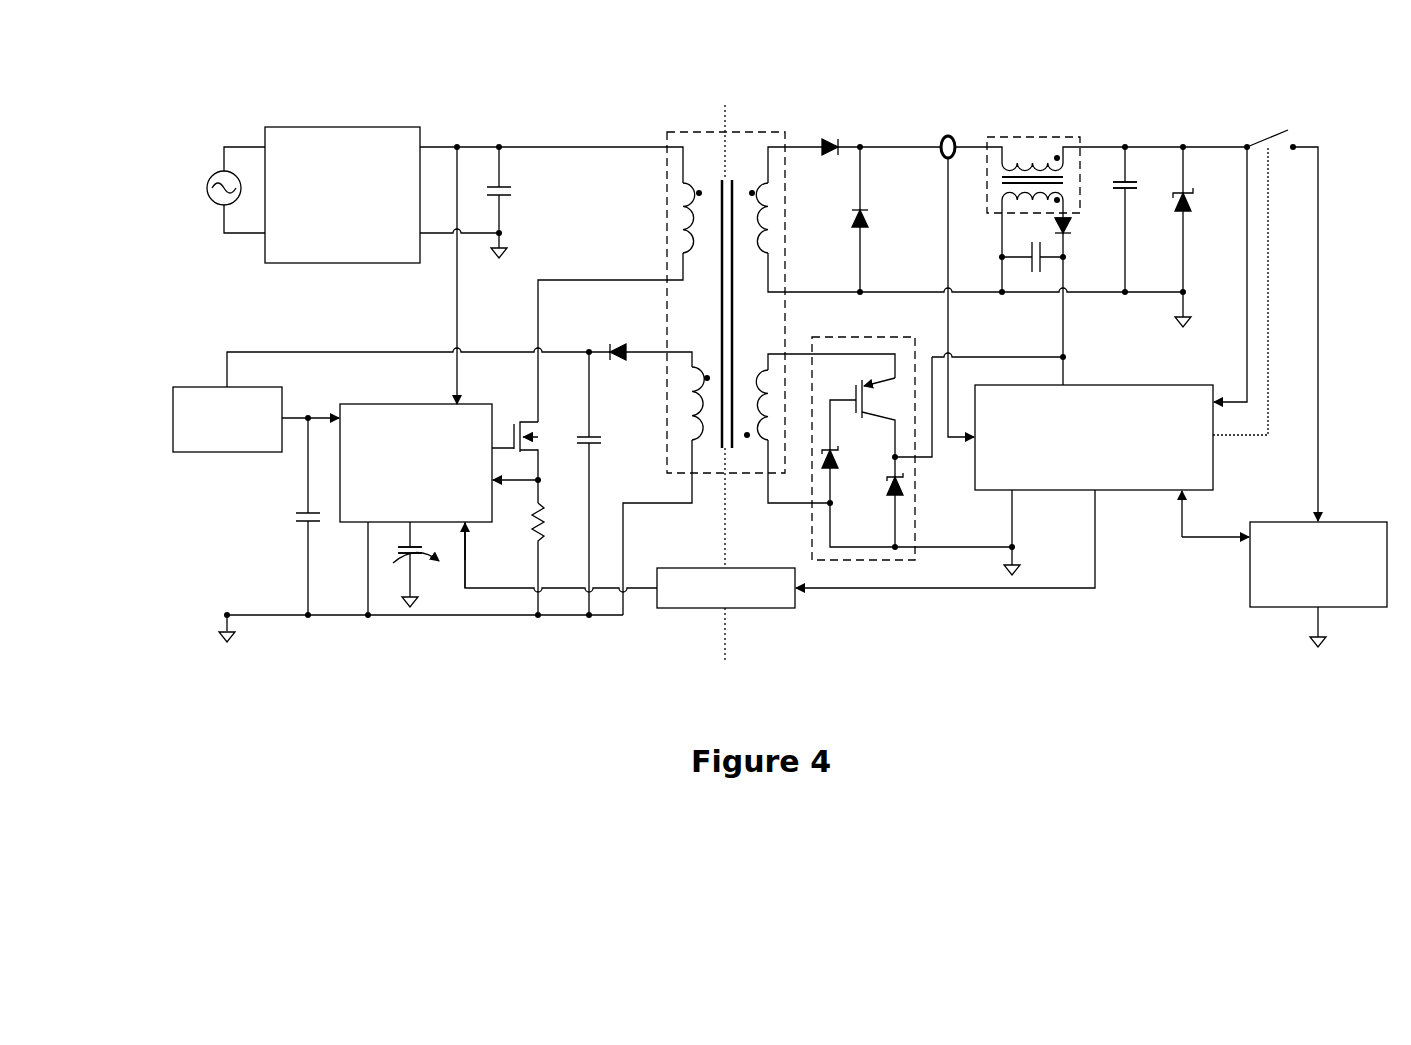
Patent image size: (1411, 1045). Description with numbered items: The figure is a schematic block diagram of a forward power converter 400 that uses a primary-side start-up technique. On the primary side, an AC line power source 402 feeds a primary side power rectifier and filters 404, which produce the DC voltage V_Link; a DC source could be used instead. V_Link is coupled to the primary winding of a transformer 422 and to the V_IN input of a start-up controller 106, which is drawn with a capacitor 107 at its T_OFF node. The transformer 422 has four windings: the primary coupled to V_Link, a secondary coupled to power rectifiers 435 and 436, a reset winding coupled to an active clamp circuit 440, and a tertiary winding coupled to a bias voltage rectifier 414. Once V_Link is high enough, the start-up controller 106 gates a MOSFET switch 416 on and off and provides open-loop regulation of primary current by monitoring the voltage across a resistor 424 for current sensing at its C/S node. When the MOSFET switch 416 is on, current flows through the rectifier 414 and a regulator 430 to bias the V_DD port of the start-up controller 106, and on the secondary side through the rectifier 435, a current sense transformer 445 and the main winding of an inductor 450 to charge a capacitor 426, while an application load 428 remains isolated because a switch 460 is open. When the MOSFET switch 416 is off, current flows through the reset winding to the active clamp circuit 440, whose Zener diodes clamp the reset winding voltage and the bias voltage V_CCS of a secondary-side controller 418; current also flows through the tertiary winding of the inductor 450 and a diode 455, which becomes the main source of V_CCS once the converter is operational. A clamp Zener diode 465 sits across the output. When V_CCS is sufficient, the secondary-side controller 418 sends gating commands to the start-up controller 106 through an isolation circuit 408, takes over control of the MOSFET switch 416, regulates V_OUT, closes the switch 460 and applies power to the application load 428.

The forward power converter 400 is at (790, 36).
The AC line power source 402 is at (212, 174).
The primary side power rectifier and filters 404 is at (343, 126).
The start-up controller 106 is at (418, 403).
The capacitor 107 is at (430, 562).
The isolation circuit 408 is at (702, 567).
The bias voltage rectifier 414 is at (613, 342).
The MOSFET switch 416 is at (519, 418).
The secondary-side controller 418 is at (1122, 384).
The transformer 422 is at (688, 131).
The resistor for current sensing 424 is at (546, 518).
The capacitor 426 is at (1137, 188).
The application load 428 is at (1293, 520).
The regulator 430 is at (211, 385).
The power rectifier 435 is at (832, 139).
The power rectifier 436 is at (856, 217).
The active clamp circuit 440 is at (856, 337).
The current sense transformer 445 is at (947, 136).
The inductor 450 is at (1043, 137).
The diode 455 is at (1070, 235).
The switch 460 is at (1258, 140).
The clamp Zener diode 465 is at (1186, 197).